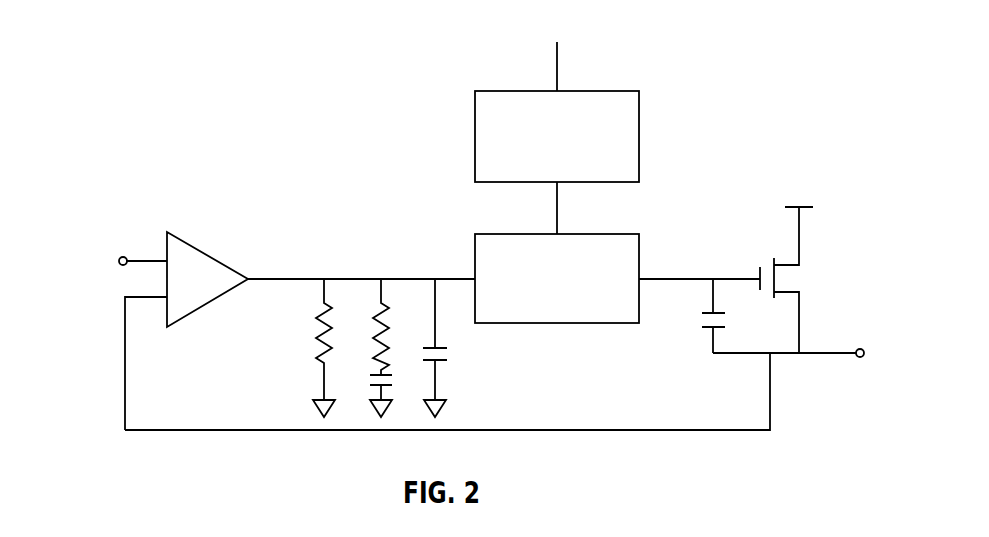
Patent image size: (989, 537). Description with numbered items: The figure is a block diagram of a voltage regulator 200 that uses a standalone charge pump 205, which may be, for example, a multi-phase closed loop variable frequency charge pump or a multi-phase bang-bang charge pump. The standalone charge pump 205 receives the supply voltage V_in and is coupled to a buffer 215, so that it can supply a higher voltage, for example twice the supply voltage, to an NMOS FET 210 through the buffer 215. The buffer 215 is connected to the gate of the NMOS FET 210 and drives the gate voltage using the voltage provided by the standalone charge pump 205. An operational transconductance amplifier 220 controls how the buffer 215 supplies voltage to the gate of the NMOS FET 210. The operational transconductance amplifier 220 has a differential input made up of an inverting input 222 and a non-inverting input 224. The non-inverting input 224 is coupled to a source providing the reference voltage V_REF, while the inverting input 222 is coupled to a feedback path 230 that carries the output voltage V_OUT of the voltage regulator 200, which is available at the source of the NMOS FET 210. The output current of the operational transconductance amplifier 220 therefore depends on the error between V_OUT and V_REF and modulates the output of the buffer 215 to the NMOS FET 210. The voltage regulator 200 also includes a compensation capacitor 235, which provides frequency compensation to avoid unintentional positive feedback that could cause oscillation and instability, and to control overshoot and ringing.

The voltage regulator 200 is at (191, 54).
The standalone charge pump 205 is at (574, 91).
The NMOS FET 210 is at (781, 280).
The buffer 215 is at (576, 234).
The operational transconductance amplifier 220 is at (208, 254).
The inverting input 222 is at (137, 296).
The non-inverting input 224 is at (118, 260).
The feedback path 230 is at (537, 430).
The compensation capacitor 235 is at (368, 393).